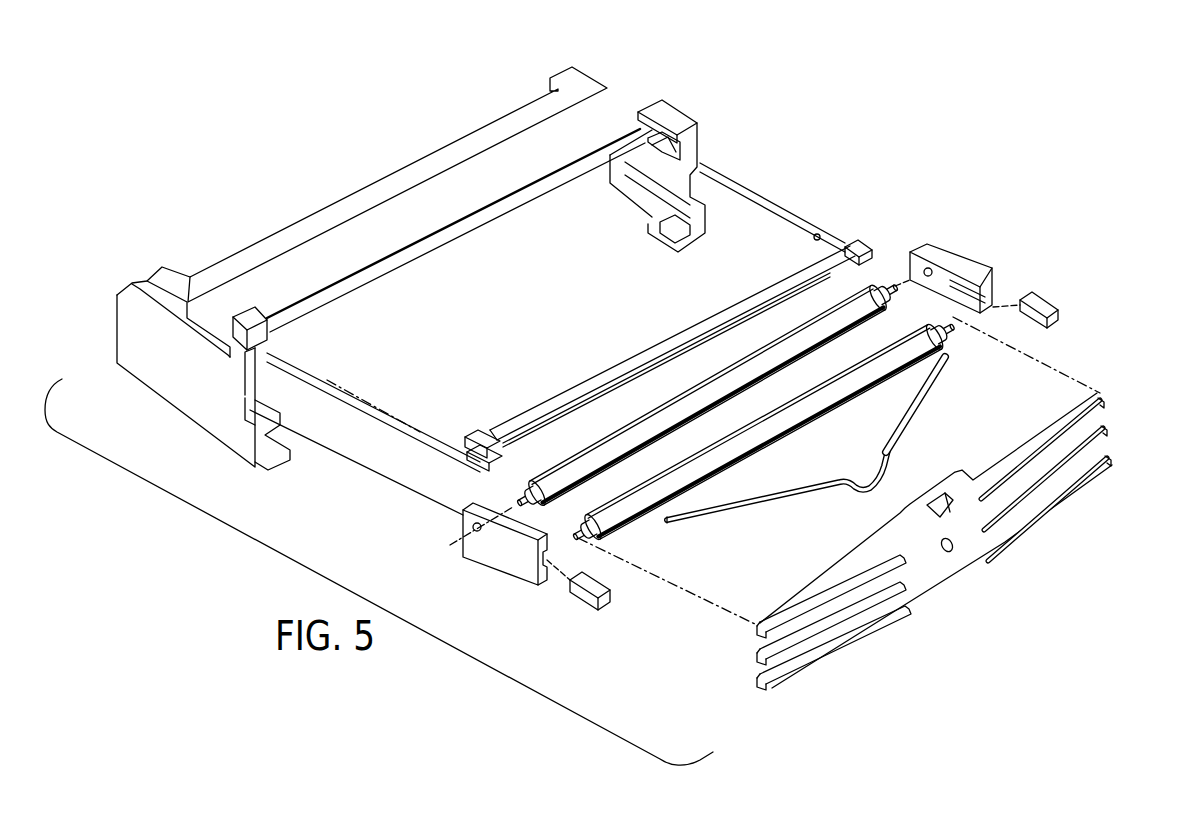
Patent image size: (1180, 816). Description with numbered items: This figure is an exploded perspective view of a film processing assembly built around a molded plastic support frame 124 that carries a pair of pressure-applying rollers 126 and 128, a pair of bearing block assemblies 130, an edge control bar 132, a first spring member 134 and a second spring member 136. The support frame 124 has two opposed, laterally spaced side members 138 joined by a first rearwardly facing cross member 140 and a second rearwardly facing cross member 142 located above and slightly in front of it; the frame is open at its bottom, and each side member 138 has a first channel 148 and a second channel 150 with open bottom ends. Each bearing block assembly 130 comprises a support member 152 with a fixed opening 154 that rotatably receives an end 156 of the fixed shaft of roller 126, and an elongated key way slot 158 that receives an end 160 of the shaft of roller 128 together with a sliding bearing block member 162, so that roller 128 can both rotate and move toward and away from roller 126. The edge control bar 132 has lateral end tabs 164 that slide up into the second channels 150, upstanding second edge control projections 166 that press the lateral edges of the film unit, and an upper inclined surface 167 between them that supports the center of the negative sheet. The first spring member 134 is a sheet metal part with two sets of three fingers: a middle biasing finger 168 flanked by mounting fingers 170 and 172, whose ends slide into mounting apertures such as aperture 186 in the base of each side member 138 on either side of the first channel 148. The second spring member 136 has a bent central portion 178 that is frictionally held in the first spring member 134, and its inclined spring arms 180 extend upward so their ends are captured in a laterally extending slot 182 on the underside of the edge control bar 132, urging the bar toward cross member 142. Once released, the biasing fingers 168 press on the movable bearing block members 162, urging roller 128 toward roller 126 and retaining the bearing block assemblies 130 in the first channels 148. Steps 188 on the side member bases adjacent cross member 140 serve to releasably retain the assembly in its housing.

The support frame 124 is at (695, 99).
The pressure-applying roller 126 is at (780, 352).
The pressure-applying roller 128 is at (860, 380).
The bearing block assembly 130 is at (766, 446).
The edge control bar 132 is at (636, 328).
The first spring member 134 is at (927, 539).
The second spring member 136 is at (826, 451).
The side member 138 is at (190, 393).
The first rearwardly facing cross member 140 is at (462, 212).
The second rearwardly facing cross member 142 is at (430, 167).
The first channel 148 is at (257, 418).
The second channel 150 is at (663, 137).
The support member 152 is at (508, 555).
The fixed opening 154 is at (477, 532).
The end of fixed axial shaft 156 is at (513, 505).
The key way slot 158 is at (985, 288).
The end of axial shaft 160 is at (578, 542).
The sliding bearing block member 162 is at (597, 598).
The lateral end tab 164 is at (497, 450).
The second edge control projection 166 is at (478, 432).
The upper inclined surface 167 is at (672, 346).
The middle biasing finger 168 is at (755, 648).
The mounting finger 170 is at (773, 612).
The mounting finger 172 is at (1110, 455).
The bent central portion 178 is at (880, 490).
The inclined spring arm 180 is at (765, 498).
The laterally extending slot 182 is at (605, 383).
The mounting aperture 186 is at (668, 230).
The projection or step 188 is at (248, 310).